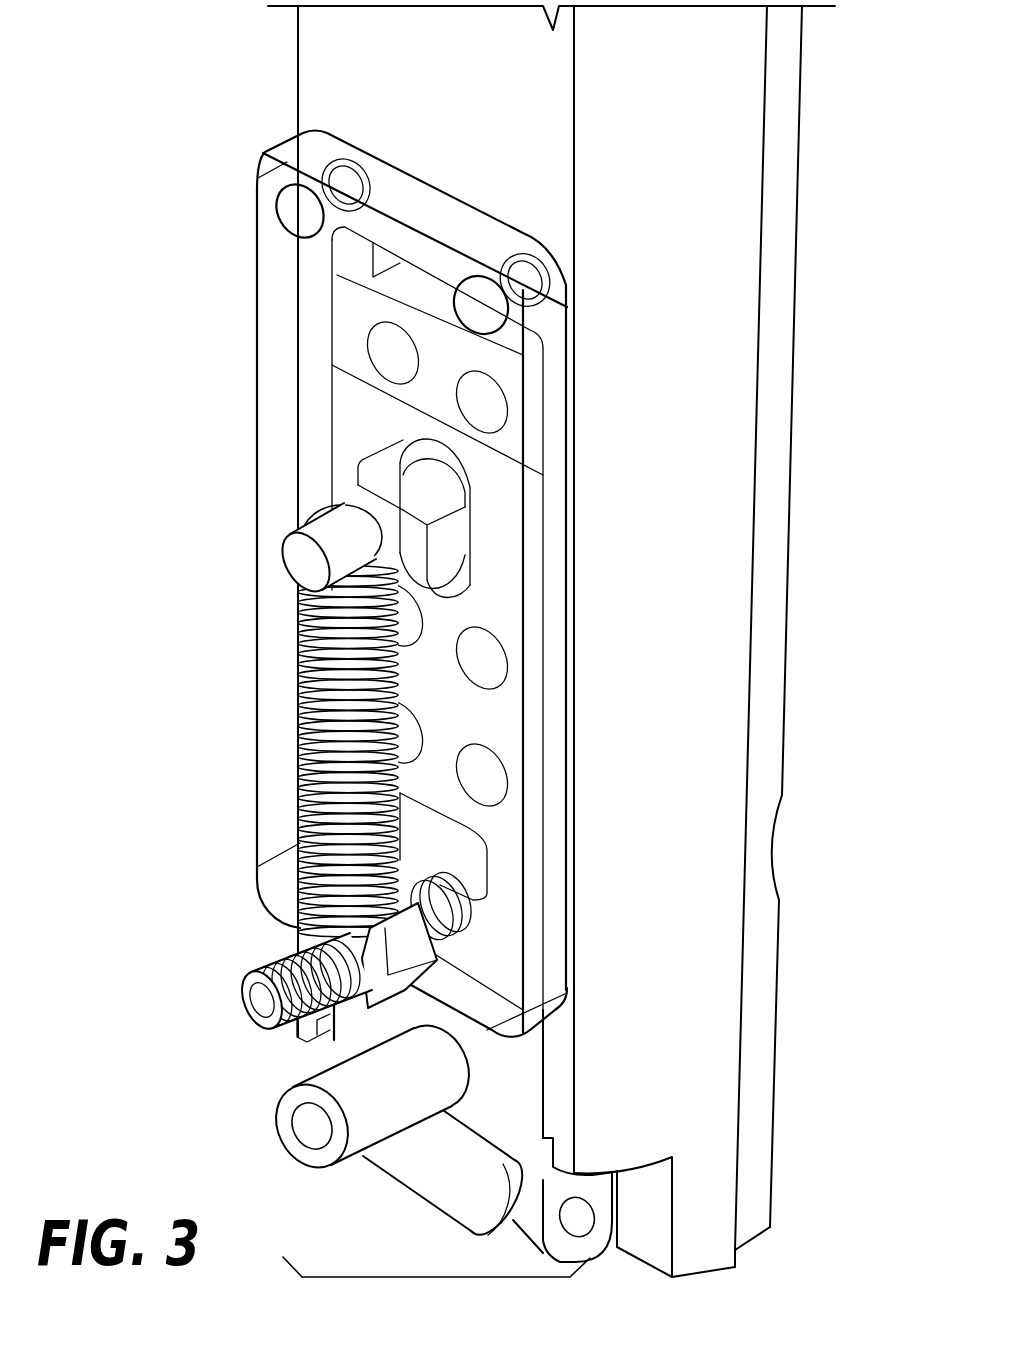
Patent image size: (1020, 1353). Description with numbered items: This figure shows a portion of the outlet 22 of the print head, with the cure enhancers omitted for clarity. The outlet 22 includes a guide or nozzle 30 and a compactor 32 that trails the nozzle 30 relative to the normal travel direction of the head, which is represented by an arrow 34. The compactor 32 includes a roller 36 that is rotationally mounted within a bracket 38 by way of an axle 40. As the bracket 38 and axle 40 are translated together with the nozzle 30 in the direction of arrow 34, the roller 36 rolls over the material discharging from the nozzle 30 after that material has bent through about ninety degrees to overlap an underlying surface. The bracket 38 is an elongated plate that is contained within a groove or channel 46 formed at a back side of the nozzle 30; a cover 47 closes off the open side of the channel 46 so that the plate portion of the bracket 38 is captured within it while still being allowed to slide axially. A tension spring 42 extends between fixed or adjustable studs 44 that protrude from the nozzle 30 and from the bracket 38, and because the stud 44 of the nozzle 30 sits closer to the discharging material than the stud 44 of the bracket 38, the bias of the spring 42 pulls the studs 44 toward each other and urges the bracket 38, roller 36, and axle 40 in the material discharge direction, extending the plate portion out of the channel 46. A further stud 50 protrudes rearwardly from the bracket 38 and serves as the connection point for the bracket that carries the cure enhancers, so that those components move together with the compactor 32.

The outlet 22 is at (266, 70).
The nozzle 30 is at (668, 983).
The compactor 32 is at (432, 1280).
The arrow 34 is at (815, 1247).
The roller 36 is at (443, 1180).
The bracket 38 is at (514, 1112).
The axle 40 is at (583, 1217).
The spring 42 is at (300, 746).
The stud 44 is at (318, 538).
The channel 46 is at (373, 587).
The cover 47 is at (257, 197).
The stud 50 is at (330, 1078).